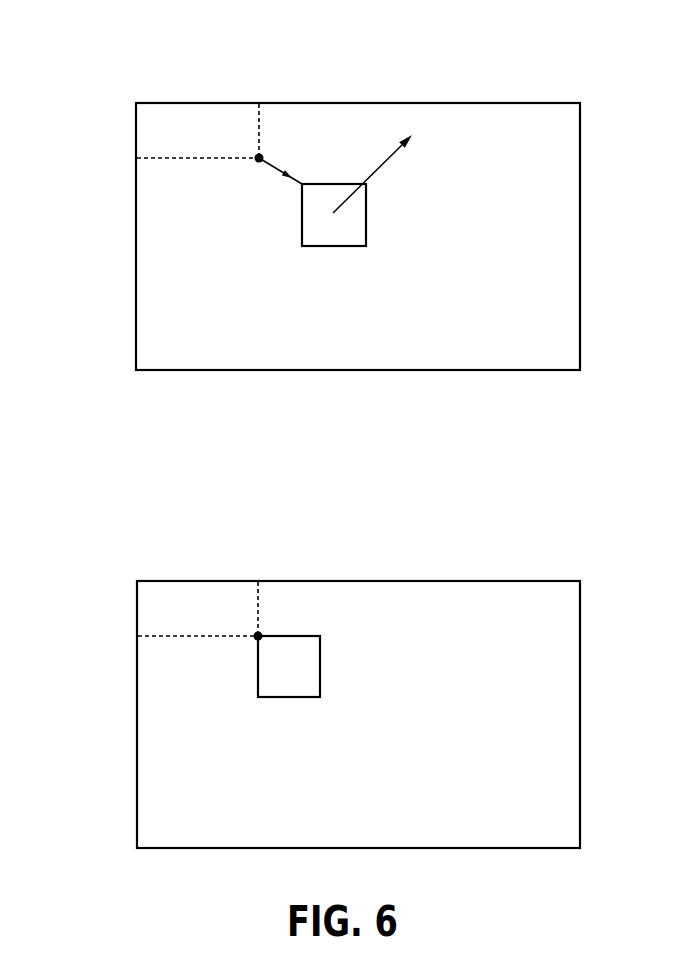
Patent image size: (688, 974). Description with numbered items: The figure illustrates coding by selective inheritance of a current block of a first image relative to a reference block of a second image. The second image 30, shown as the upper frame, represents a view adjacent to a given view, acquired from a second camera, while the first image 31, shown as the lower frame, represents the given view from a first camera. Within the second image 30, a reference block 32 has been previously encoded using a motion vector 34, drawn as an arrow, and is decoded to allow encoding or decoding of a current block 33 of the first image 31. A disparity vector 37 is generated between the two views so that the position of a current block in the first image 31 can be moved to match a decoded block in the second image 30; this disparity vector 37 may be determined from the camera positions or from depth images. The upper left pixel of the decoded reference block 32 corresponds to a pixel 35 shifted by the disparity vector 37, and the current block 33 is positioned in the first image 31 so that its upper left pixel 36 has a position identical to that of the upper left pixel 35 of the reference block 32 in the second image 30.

The second image 30 is at (529, 103).
The first image 31 is at (529, 581).
The reference block 32 is at (333, 183).
The current block 33 is at (300, 633).
The motion vector 34 is at (378, 170).
The pixel 35 is at (259, 158).
The upper left pixel 36 is at (258, 636).
The disparity vector 37 is at (273, 172).